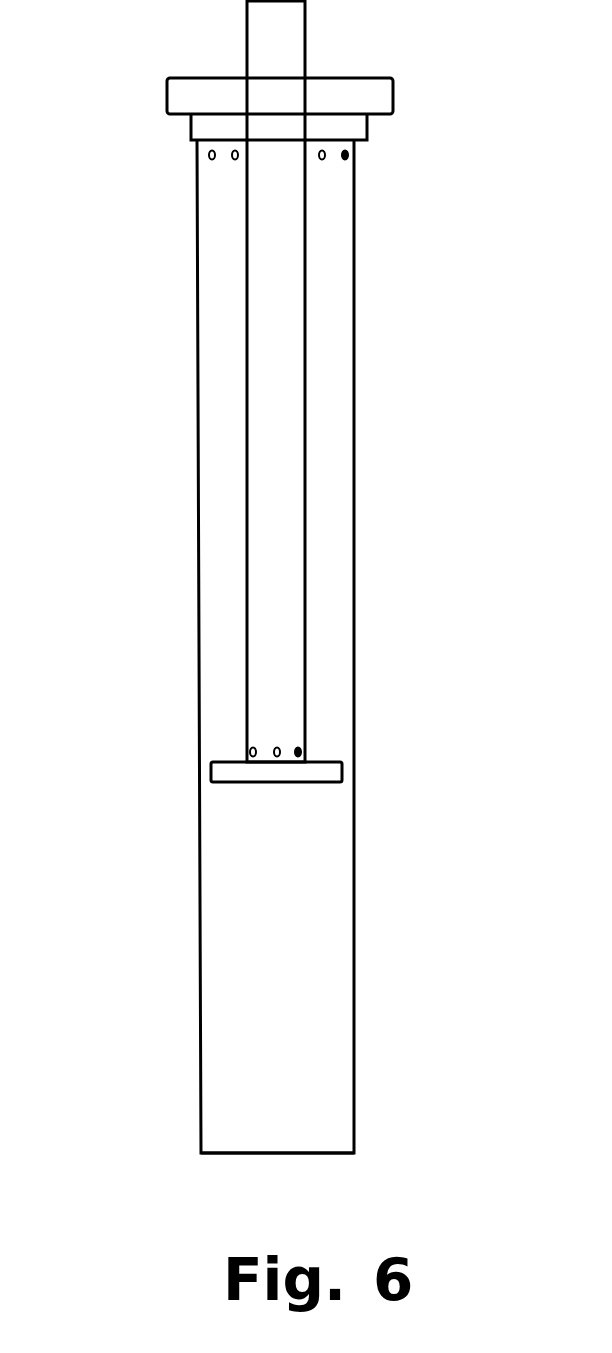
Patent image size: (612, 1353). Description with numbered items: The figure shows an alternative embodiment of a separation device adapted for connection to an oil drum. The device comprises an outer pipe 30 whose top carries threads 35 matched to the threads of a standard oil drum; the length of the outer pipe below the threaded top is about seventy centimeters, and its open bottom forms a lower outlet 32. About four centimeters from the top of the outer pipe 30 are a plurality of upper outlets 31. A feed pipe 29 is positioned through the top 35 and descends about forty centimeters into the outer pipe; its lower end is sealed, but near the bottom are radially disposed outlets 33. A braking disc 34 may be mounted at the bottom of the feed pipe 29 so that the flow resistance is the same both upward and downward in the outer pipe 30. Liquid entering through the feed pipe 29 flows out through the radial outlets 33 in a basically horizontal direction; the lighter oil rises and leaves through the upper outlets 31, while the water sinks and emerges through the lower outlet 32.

The feed pipe 29 is at (288, 38).
The outer pipe 30 is at (354, 938).
The upper outlets 31 is at (348, 155).
The lower outlet 32 is at (305, 1155).
The outlets 33 is at (300, 752).
The braking disc 34 is at (340, 778).
The threads 35 is at (190, 133).